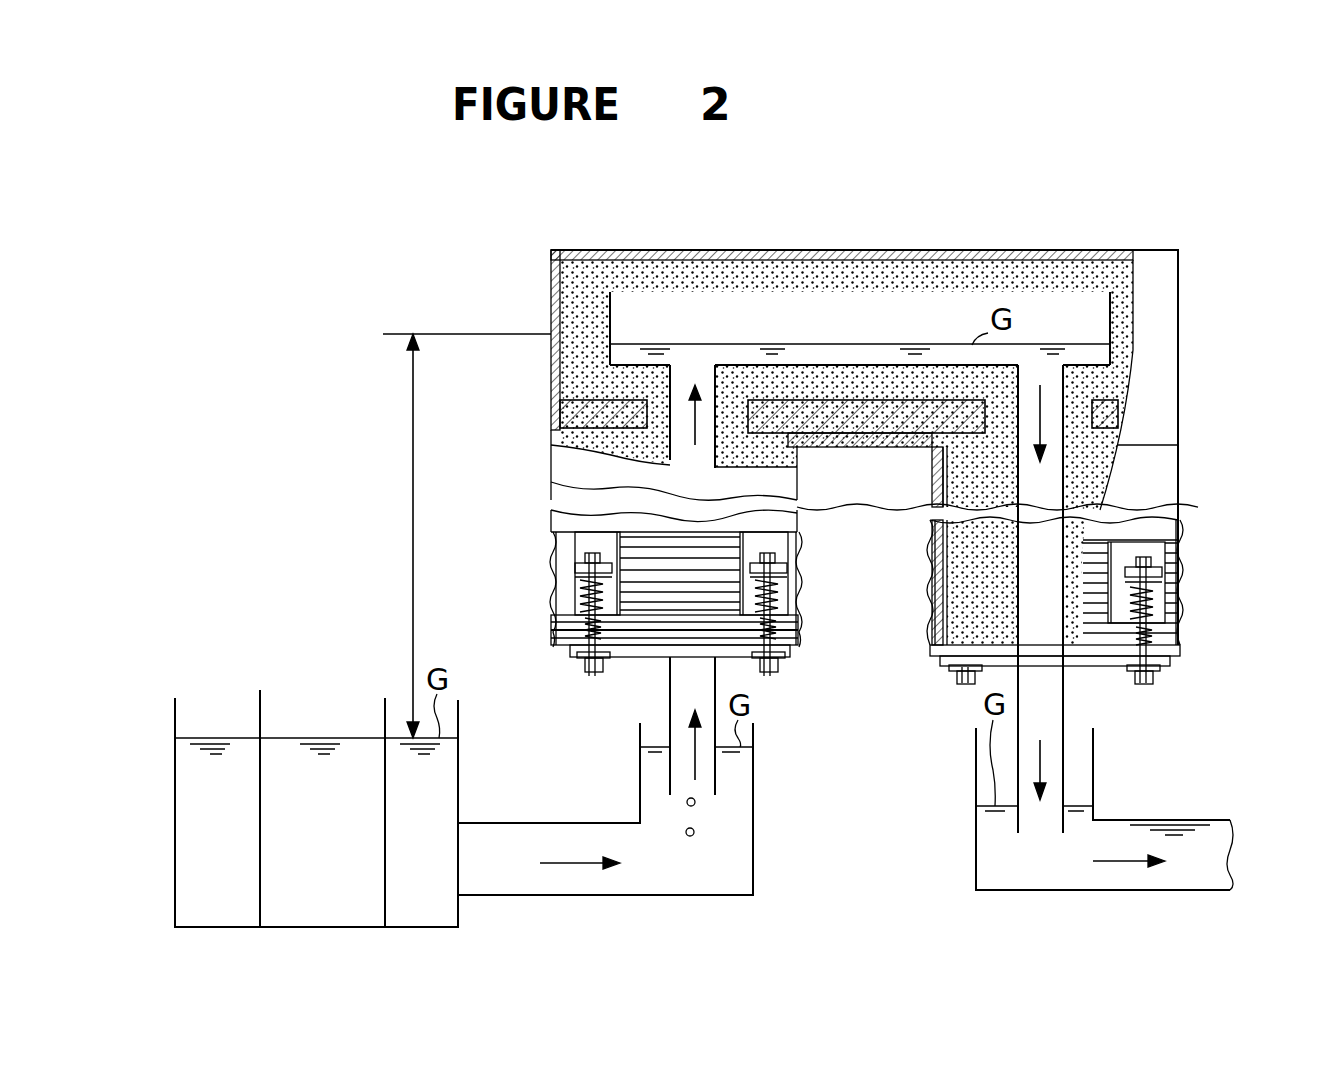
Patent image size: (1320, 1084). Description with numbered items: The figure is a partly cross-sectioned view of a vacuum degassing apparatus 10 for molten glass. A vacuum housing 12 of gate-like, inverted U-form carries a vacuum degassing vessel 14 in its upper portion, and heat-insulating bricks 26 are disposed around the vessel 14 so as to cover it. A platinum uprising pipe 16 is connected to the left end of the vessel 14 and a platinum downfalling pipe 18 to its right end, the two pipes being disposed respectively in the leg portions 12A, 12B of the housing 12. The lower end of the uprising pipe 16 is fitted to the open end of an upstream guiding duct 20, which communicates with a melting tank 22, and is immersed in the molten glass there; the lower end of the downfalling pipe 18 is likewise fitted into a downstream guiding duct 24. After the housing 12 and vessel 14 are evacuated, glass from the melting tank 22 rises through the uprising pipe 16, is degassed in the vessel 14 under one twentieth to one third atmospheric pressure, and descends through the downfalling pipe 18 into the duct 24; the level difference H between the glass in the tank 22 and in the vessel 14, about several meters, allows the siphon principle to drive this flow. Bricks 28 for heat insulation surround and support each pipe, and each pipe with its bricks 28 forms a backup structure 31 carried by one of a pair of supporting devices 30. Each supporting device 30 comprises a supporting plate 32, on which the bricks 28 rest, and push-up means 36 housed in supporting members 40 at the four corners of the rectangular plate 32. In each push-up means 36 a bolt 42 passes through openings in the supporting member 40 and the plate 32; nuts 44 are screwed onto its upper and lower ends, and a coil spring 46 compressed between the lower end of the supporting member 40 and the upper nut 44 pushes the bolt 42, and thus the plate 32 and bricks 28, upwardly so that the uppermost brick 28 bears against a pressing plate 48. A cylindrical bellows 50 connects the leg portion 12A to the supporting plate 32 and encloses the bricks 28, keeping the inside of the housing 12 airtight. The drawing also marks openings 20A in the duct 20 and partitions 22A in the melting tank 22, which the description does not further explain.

The vacuum degassing apparatus 10 is at (949, 246).
The vacuum housing 12 is at (1062, 258).
The leg portion 12A is at (554, 483).
The leg portion 12B is at (1160, 497).
The vacuum degassing vessel 14 is at (742, 318).
The uprising pipe 16 is at (568, 454).
The downfalling pipe 18 is at (1043, 483).
The upstream guiding duct 20 is at (538, 823).
The holes in supply pipe 20A is at (696, 803).
The melting tank 22 is at (178, 710).
The tank partitions 22A is at (382, 704).
The downstream guiding duct 24 is at (1063, 890).
The bricks for heat insulation 26 is at (1135, 278).
The bricks for heat insulation 28 is at (930, 488).
The supporting device 30 is at (538, 575).
The backup structure 31 is at (541, 427).
The supporting plate 32 is at (797, 650).
The push-up means 36 is at (596, 682).
The supporting member 40 is at (560, 652).
The bolt 42 is at (645, 648).
The nut 44 is at (558, 553).
The coil spring 46 is at (551, 600).
The pressing plate 48 is at (838, 395).
The cylindrical bellows 50 is at (551, 630).
The difference between the levels H is at (463, 536).